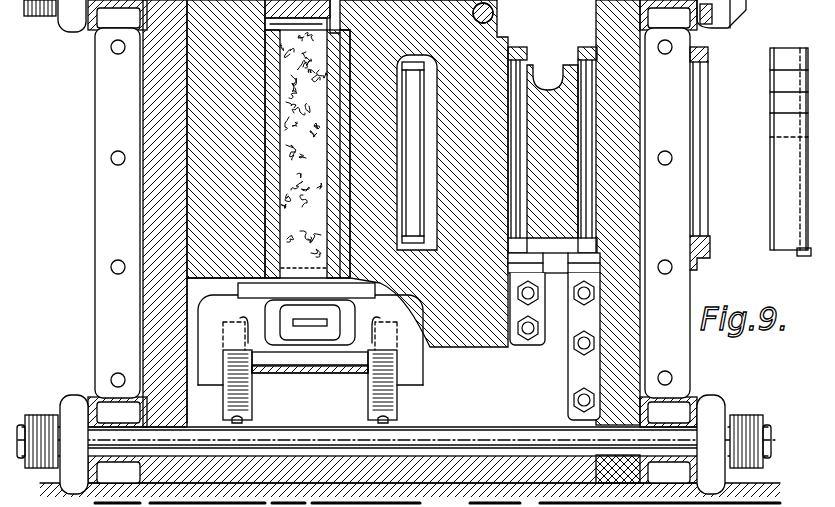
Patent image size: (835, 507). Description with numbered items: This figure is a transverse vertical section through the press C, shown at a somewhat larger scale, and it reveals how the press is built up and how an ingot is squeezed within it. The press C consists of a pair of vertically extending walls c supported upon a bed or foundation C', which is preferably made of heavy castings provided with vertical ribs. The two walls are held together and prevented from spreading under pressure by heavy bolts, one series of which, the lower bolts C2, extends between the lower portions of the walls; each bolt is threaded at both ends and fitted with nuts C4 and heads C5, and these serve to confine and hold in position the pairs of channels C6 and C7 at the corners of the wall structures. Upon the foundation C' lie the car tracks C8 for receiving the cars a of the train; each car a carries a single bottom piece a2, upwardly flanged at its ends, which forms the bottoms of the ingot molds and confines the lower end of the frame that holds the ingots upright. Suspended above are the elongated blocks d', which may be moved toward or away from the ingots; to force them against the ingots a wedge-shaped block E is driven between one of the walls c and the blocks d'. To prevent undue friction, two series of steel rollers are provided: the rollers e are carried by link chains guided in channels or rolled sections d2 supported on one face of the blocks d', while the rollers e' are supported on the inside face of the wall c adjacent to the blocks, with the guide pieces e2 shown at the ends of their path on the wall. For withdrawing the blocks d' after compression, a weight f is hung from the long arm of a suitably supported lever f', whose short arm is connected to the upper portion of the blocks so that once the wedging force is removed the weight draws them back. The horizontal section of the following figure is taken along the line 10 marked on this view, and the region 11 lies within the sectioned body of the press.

The press C is at (378, 213).
The vertically extending wall c is at (96, 213).
The bed or foundation C' is at (410, 449).
The lower series of bolts C2 is at (396, 441).
The nut C4 is at (765, 405).
The bolt head C5 is at (726, 386).
The channel C6 is at (393, 412).
The channel C7 is at (393, 245).
The car tracks C8 is at (405, 414).
The section line 10— 10 is at (140, 137).
The granular channel 11 is at (307, 139).
The car a is at (364, 335).
The bottom piece a2 is at (306, 291).
The elongated blocks d' is at (505, 22).
The channels or rolled sections d2 is at (524, 56).
The wedge-shaped blocks E is at (545, 80).
The steel rollers e is at (494, 152).
The steel rollers e' is at (710, 149).
The guide bracket e2 is at (710, 55).
The weight f is at (774, 152).
The lever f' is at (734, 14).